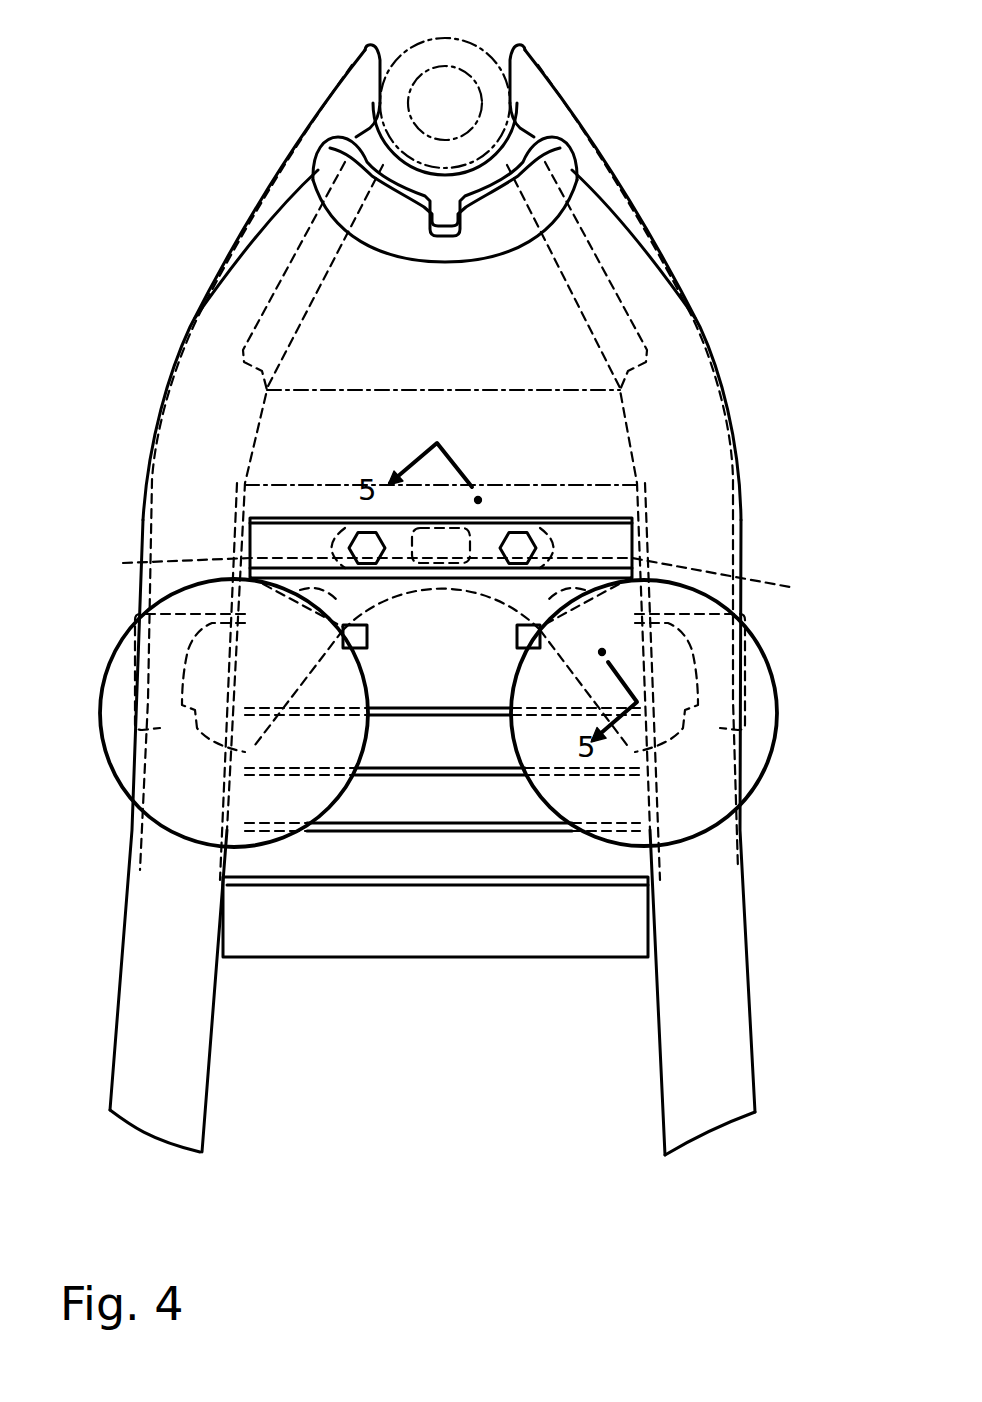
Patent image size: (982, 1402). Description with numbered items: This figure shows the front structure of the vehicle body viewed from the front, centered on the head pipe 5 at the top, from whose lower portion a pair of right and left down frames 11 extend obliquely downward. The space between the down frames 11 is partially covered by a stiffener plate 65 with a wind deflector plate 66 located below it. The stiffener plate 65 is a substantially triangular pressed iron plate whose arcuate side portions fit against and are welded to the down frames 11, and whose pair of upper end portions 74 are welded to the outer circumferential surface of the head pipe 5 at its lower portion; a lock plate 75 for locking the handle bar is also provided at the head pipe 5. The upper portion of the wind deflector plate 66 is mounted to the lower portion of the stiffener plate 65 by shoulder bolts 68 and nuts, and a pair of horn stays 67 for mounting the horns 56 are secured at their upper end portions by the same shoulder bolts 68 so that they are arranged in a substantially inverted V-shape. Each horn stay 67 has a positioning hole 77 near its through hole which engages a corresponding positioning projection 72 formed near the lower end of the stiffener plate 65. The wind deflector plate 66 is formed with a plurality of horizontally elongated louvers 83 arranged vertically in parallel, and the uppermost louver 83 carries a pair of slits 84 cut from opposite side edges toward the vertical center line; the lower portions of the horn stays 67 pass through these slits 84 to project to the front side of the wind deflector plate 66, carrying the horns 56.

The head pipe 5 is at (395, 83).
The down frames 11 is at (130, 990).
The horns 56 is at (100, 713).
The stiffener plate 65 is at (567, 330).
The wind deflector plate 66 is at (450, 940).
The horn stays 67 is at (300, 550).
The shoulder bolts 68 is at (350, 525).
The positioning projections 72 is at (70, 578).
The upper end portions 74 is at (508, 70).
The lock plate 75 is at (563, 163).
The positioning hole 77 is at (487, 564).
The louvers 83 is at (405, 792).
The slits 84 is at (517, 637).